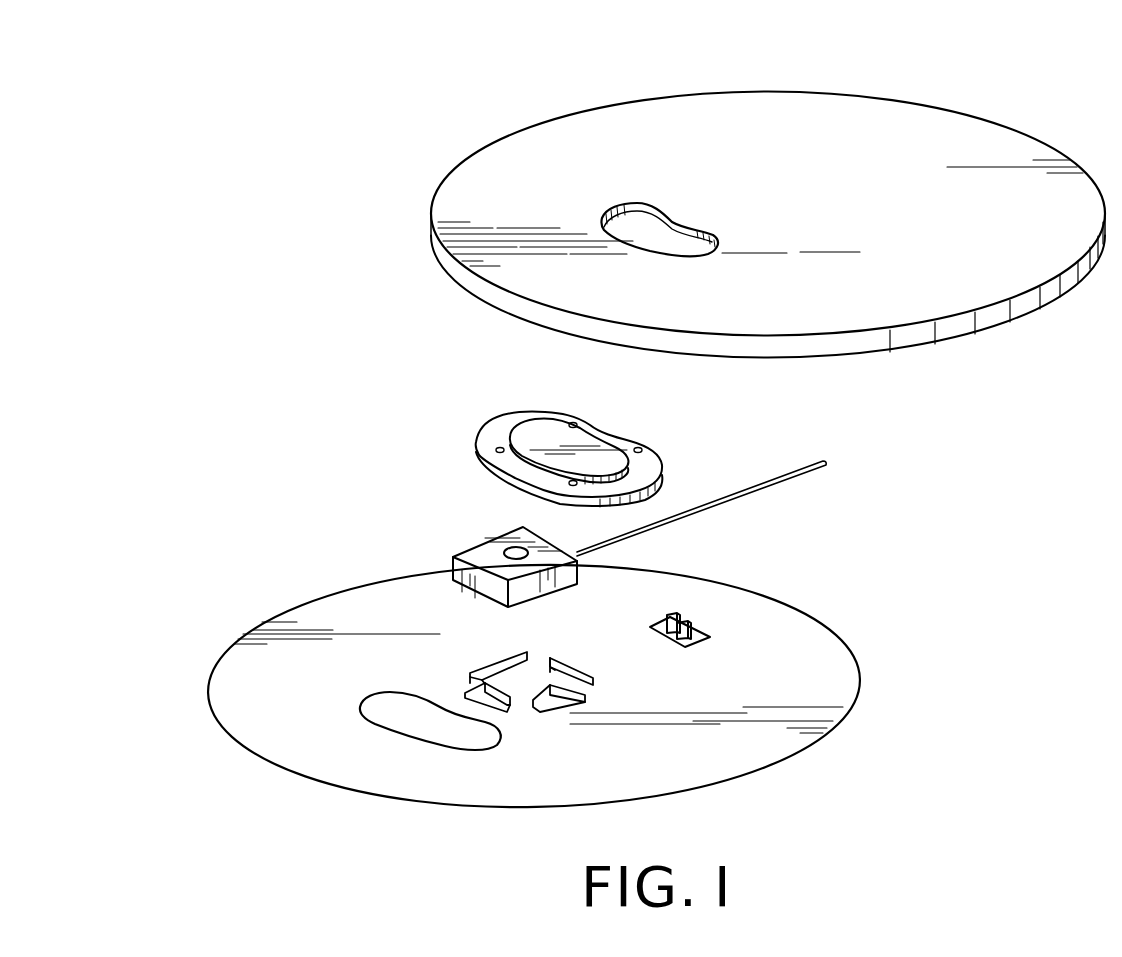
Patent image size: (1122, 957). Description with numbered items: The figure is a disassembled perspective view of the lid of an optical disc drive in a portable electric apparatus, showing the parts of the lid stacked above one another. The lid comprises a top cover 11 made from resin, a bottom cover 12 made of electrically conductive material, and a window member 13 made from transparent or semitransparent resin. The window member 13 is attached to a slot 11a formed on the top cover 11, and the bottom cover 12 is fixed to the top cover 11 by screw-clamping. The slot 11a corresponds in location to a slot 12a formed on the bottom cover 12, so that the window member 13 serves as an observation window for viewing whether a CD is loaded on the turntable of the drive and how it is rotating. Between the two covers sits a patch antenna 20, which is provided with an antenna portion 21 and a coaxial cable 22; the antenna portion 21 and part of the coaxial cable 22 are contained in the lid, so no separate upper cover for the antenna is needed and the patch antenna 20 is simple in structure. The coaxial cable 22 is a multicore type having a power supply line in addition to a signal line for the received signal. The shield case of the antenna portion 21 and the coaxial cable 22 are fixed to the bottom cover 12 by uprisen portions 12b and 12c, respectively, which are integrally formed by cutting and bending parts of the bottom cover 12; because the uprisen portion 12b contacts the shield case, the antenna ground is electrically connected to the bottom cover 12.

The top cover 11 is at (703, 140).
The slot 11a is at (630, 223).
The bottom cover 12 is at (750, 752).
The slot 12a is at (397, 707).
The uprisen portion 12b is at (572, 690).
The uprisen portion 12c is at (690, 623).
The window member 13 is at (540, 433).
The patch antenna 20 is at (460, 458).
The antenna portion 21 is at (483, 550).
The coaxial cable 22 is at (600, 548).